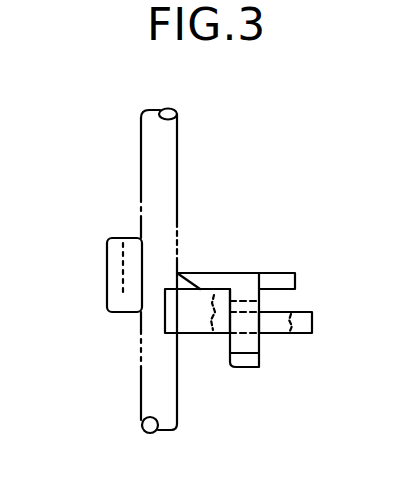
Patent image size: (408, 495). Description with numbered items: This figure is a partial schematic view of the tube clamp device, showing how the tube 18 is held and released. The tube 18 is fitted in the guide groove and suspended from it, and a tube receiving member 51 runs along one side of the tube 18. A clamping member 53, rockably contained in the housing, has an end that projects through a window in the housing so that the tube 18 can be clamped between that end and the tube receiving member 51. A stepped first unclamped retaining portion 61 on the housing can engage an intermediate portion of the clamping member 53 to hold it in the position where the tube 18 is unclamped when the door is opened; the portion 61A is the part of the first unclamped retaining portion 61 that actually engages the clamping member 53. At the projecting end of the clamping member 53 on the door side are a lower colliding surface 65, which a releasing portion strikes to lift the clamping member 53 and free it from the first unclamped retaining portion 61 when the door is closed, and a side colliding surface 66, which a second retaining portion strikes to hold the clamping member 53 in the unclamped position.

The tube 18 is at (175, 152).
The tube receiving member 51 is at (107, 268).
The clamping member 53 is at (250, 273).
The side colliding surface 66 is at (192, 272).
The first unclamped retaining portion 61 is at (203, 335).
The lower colliding surface 65 is at (259, 358).
The portion of the first unclamped retaining portion 61A is at (262, 300).